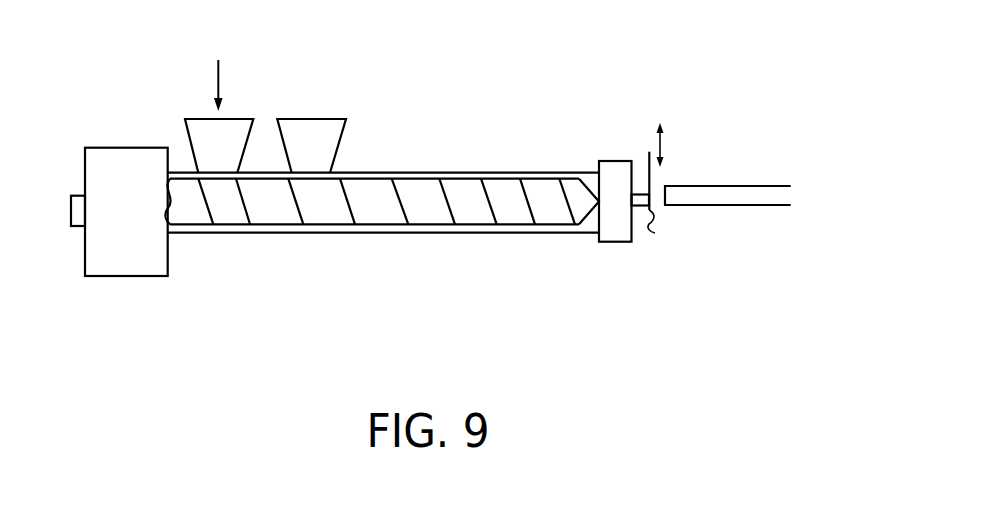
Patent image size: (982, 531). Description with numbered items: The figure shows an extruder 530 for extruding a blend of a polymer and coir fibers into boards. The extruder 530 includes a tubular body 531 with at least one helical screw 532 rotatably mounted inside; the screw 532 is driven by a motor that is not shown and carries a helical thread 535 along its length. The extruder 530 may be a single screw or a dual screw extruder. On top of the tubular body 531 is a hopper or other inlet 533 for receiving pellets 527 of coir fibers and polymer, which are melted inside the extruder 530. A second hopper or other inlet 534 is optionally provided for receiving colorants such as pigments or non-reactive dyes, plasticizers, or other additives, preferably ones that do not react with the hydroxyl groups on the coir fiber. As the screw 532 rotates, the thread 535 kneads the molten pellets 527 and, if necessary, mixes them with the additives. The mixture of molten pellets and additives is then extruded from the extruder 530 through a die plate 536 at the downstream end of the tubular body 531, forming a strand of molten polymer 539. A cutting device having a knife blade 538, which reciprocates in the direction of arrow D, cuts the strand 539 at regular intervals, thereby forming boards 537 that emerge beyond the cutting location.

The pellets 527 is at (221, 60).
The extruder 530 is at (485, 286).
The tubular body 531 is at (427, 225).
The helical screw 532 is at (322, 212).
The hopper or other inlet 533 is at (203, 131).
The second hopper or other inlet 534 is at (345, 138).
The helical thread 535 is at (447, 190).
The die plate 536 is at (615, 242).
The boards 537 is at (735, 206).
The knife blade 538 is at (653, 178).
The strand of molten polymer 539 is at (643, 192).